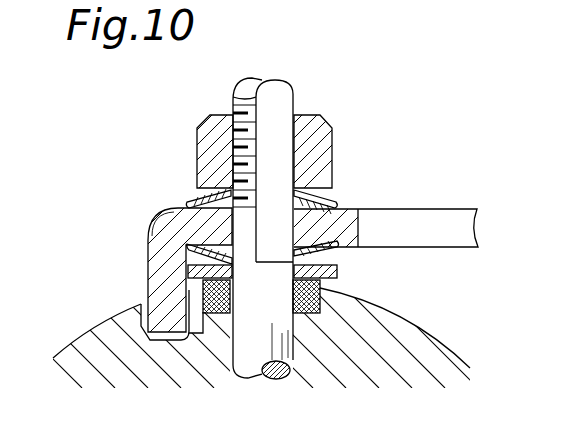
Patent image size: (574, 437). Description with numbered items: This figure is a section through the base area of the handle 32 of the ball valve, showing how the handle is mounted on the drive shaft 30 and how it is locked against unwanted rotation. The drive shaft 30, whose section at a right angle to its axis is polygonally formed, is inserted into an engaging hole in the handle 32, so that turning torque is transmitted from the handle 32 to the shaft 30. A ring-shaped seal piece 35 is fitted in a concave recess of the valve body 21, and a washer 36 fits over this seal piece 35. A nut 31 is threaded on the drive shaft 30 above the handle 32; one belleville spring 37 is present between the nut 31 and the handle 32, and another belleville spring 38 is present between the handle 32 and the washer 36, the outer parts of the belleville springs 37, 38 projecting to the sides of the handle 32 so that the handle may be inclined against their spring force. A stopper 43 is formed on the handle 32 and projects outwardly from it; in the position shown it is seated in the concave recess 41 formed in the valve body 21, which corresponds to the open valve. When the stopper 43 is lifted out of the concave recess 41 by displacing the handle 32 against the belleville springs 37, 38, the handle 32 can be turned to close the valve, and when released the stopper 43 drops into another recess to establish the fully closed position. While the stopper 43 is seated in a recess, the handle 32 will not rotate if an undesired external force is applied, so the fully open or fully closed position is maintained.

The valve body 21 is at (100, 346).
The drive shaft 30 is at (273, 97).
The nut 31 is at (312, 153).
The handle 32 is at (440, 221).
The seal piece 35 is at (305, 317).
The washer 36 is at (337, 277).
The belleville spring 37 is at (323, 194).
The belleville spring 38 is at (337, 253).
The concave recess 41 is at (163, 338).
The stopper 43 is at (160, 258).